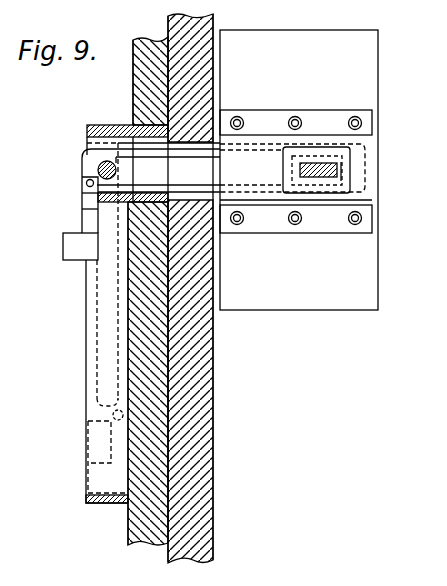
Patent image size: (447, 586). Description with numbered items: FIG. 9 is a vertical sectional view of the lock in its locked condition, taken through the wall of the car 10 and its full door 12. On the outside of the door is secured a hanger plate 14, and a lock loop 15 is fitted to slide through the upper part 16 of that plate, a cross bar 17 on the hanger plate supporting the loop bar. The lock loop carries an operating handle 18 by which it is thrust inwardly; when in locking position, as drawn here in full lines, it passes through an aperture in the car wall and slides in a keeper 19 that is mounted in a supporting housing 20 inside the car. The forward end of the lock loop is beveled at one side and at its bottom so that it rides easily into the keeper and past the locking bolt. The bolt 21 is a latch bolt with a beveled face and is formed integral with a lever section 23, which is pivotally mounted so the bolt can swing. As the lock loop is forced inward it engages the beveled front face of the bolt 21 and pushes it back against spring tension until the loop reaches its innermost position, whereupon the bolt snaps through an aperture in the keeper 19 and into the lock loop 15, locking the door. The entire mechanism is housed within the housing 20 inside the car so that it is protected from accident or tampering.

The car 10 is at (200, 370).
The full door 12 is at (146, 522).
The hanger plate 14 is at (97, 454).
The lock loop 15 is at (82, 159).
The upper part of the hanger plate 16 is at (102, 125).
The cross bar 17 is at (98, 169).
The operating handle 18 is at (64, 250).
The keeper 19 is at (329, 118).
The supporting housing 20 is at (294, 37).
The bolt 21 is at (346, 170).
The lever section 23 is at (300, 171).